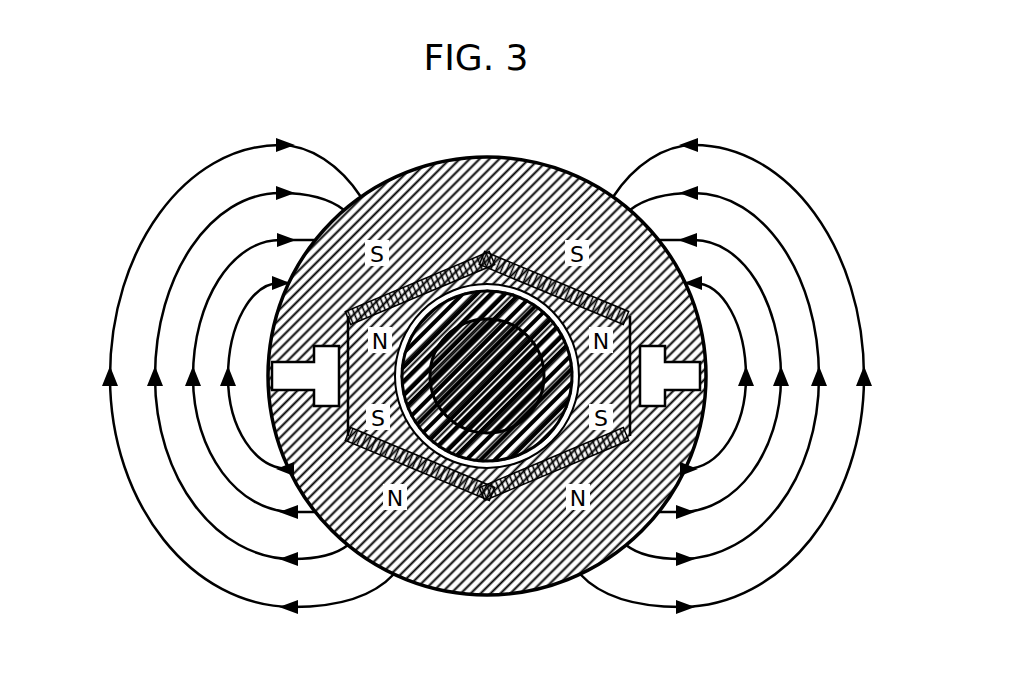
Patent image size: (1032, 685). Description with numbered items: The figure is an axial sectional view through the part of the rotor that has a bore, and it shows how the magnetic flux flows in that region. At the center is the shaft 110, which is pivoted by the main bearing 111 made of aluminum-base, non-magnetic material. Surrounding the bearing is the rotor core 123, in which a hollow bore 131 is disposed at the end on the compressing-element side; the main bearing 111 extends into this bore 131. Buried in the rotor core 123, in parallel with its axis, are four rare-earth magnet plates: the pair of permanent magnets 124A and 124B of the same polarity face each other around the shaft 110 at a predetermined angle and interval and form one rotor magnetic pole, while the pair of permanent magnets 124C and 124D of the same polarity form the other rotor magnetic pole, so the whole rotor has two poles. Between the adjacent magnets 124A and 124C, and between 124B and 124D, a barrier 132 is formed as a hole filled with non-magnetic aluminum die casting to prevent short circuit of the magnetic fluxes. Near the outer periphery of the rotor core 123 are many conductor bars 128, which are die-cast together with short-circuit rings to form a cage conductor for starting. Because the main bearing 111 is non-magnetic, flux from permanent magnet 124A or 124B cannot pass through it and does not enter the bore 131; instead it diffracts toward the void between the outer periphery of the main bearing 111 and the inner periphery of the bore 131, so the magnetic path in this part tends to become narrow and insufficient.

The shaft 110 is at (458, 497).
The main bearing 111 is at (445, 215).
The rotor core 123 is at (480, 163).
The permanent magnet 124A is at (422, 283).
The permanent magnet 124B is at (522, 268).
The permanent magnet 124C is at (412, 500).
The permanent magnet 124D is at (548, 505).
The conductor bars 128 is at (508, 572).
The hollow bore 131 is at (487, 462).
The barrier 132 is at (285, 375).